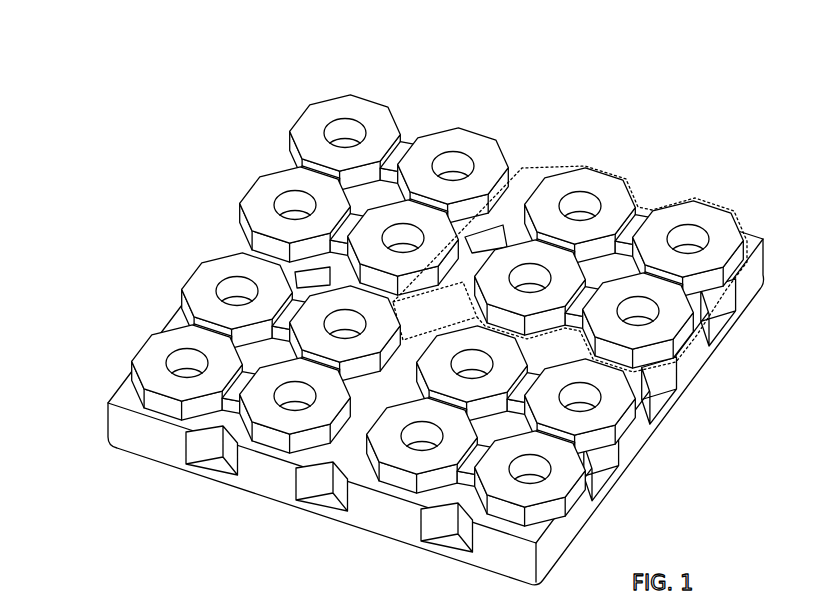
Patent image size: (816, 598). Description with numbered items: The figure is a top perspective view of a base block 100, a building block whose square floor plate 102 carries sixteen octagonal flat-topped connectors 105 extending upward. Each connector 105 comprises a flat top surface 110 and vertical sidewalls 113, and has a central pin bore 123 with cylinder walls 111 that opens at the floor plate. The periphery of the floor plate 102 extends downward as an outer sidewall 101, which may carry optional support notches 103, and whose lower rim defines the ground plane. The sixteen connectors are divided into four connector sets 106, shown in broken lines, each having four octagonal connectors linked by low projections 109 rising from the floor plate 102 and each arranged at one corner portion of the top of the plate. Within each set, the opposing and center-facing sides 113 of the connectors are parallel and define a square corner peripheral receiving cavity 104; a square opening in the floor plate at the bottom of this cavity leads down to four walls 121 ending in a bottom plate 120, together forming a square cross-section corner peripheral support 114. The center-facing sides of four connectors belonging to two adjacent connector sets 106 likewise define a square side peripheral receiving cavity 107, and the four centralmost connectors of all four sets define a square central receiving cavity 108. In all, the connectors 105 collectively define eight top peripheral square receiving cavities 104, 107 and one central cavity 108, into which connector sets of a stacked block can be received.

The base block 100 is at (411, 302).
The outer sidewall 101 is at (139, 447).
The floor plate 102 is at (122, 394).
The support notches 103 is at (320, 502).
The corner peripheral receiving cavity 104 is at (632, 270).
The octagonal flat-topped connector 105 is at (308, 142).
The connector set 106 is at (590, 271).
The side peripheral receiving cavity 107 is at (580, 354).
The central receiving cavity 108 is at (420, 345).
The low projections 109 is at (432, 203).
The top surface 110 is at (270, 108).
The cylinder walls 111 is at (323, 87).
The vertical sidewalls 113 is at (263, 249).
The corner peripheral support 114 is at (603, 283).
The bottom plate 120 is at (135, 593).
The walls 121 is at (631, 286).
The bore 123 is at (364, 85).